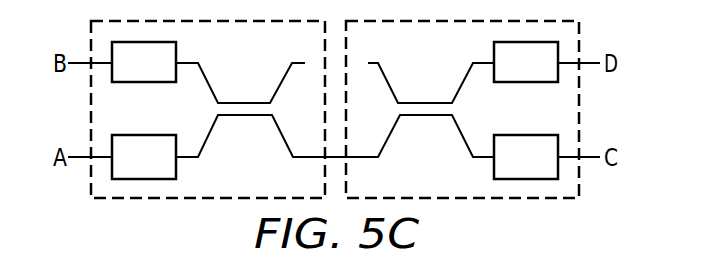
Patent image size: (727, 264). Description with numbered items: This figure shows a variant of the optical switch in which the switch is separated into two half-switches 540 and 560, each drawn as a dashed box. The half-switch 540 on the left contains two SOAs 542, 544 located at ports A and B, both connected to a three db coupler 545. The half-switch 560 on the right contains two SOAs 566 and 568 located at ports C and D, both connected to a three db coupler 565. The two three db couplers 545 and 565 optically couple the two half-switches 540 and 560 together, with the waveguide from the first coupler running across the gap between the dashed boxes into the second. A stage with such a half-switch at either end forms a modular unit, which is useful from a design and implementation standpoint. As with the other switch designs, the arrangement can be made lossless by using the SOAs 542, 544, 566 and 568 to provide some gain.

The half-switch 540 is at (91, 98).
The SOA 542 is at (176, 168).
The SOA 544 is at (162, 83).
The 3 db coupler 545 is at (208, 81).
The half-switch 560 is at (579, 116).
The 3 db coupler 565 is at (462, 76).
The SOA 566 is at (493, 166).
The SOA 568 is at (512, 83).